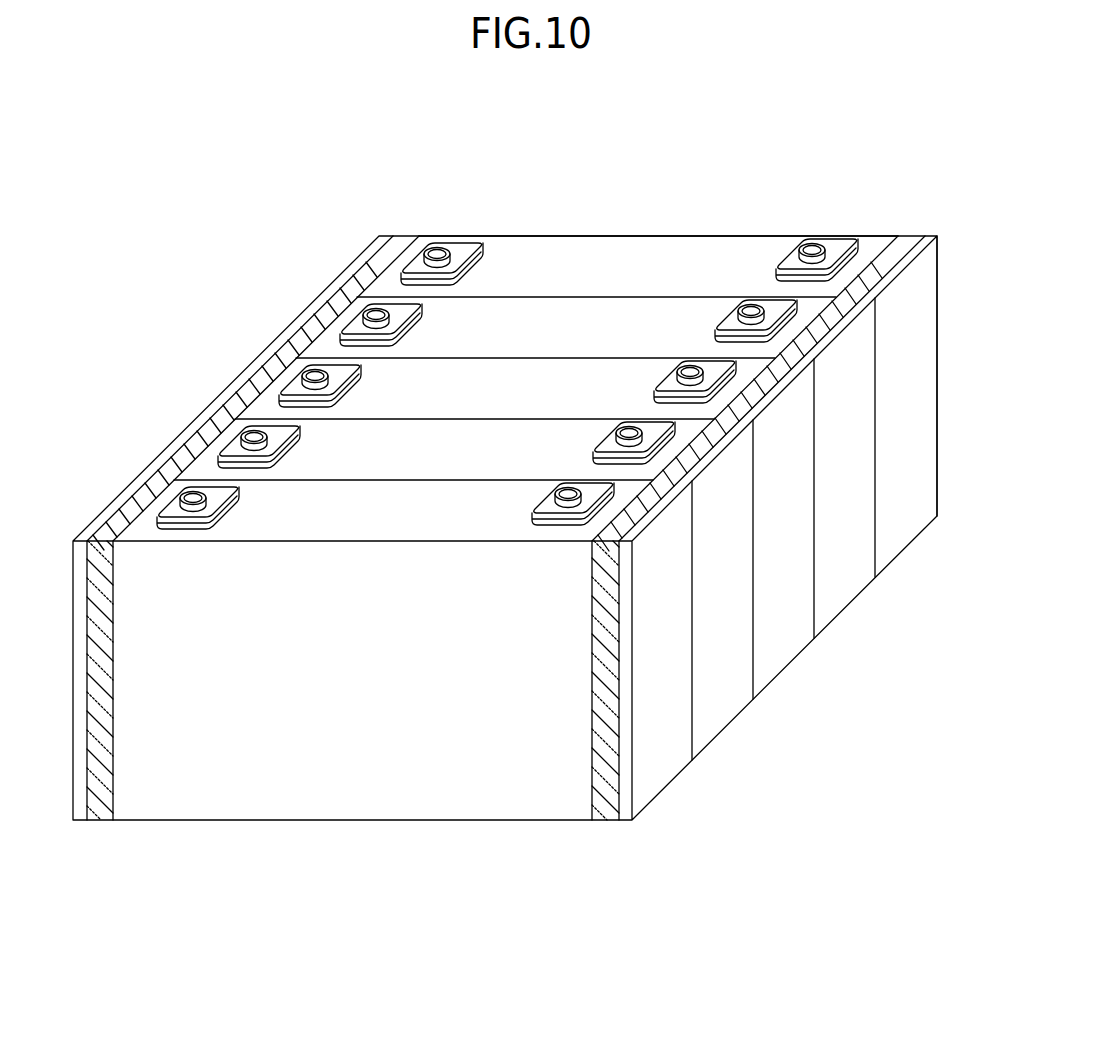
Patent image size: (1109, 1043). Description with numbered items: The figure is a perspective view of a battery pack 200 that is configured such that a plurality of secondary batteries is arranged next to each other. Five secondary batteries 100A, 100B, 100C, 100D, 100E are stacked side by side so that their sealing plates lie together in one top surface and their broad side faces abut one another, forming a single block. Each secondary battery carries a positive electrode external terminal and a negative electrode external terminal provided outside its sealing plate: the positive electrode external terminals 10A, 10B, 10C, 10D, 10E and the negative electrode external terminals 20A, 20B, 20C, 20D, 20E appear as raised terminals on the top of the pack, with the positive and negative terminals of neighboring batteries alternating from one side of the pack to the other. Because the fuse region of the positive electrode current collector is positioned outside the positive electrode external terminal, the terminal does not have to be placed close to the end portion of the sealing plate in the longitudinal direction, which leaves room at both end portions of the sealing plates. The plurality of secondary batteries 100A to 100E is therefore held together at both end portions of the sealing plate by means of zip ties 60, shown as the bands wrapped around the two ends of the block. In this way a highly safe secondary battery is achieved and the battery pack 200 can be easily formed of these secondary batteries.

The battery pack 200 is at (796, 191).
The zip tie 60 is at (100, 800).
The secondary battery 100A is at (662, 758).
The secondary battery 100B is at (723, 694).
The secondary battery 100C is at (785, 632).
The secondary battery 100D is at (848, 572).
The secondary battery 100E is at (910, 512).
The positive electrode external terminal 10A is at (548, 504).
The positive electrode external terminal 10B is at (298, 431).
The positive electrode external terminal 10C is at (670, 382).
The positive electrode external terminal 10D is at (420, 309).
The positive electrode external terminal 10E is at (793, 259).
The negative electrode external terminal 20A is at (237, 493).
The negative electrode external terminal 20B is at (609, 443).
The negative electrode external terminal 20C is at (359, 370).
The negative electrode external terminal 20D is at (731, 321).
The negative electrode external terminal 20E is at (481, 248).